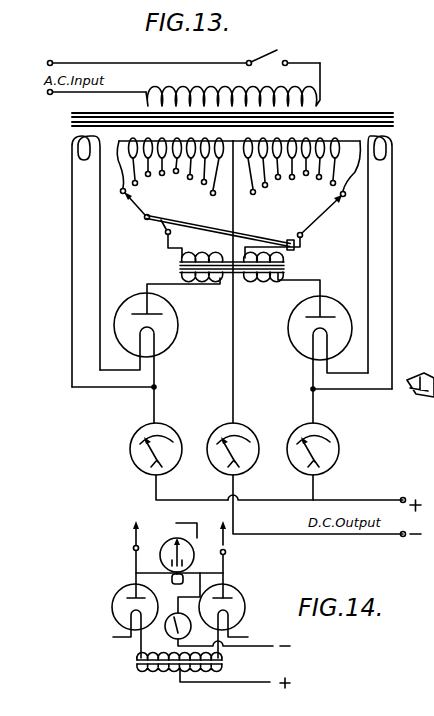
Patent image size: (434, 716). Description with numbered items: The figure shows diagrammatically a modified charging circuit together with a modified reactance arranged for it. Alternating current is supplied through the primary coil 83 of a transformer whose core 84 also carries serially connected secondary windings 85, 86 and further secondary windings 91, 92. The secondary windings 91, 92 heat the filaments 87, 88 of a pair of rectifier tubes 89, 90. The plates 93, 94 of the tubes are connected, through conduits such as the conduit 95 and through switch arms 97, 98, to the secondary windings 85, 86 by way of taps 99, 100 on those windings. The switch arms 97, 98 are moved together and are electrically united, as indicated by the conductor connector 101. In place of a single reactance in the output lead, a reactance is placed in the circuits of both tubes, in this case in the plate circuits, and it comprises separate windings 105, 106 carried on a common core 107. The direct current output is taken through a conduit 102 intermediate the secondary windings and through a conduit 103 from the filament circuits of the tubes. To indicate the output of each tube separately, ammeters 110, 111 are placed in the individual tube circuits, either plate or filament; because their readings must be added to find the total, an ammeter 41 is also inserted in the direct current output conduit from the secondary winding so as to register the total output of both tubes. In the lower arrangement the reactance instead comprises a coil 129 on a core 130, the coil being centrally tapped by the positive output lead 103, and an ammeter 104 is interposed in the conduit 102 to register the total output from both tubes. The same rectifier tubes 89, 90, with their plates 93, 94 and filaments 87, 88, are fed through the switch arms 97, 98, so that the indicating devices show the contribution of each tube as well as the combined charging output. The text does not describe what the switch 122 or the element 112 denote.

In FIG. 13, the switch 122 is at (268, 54).
In FIG. 13, the primary coil 83 is at (230, 92).
In FIG. 13, the core 84 is at (367, 117).
In FIG. 13, the secondary winding 91 is at (72, 147).
In FIG. 13, the secondary winding 92 is at (392, 150).
In FIG. 13, the tap 99 is at (187, 177).
In FIG. 13, the tap 100 is at (292, 180).
In FIG. 13, the conductor connector 101 is at (177, 216).
In FIG. 13, the secondary winding 85 is at (128, 208).
In FIG. 13, the secondary winding 86 is at (326, 216).
In FIG. 13, the switch arm 97 is at (165, 233).
In FIG. 14, the switch arm 97 is at (134, 536).
In FIG. 13, the switch arm 98 is at (327, 209).
In FIG. 14, the switch arm 98 is at (227, 544).
In FIG. 13, the conduit 95 is at (167, 246).
In FIG. 13, the winding 105 is at (200, 255).
In FIG. 13, the winding 106 is at (272, 245).
In FIG. 13, the common core 107 is at (284, 266).
In FIG. 13, the plate 93 is at (140, 310).
In FIG. 14, the plate 93 is at (128, 597).
In FIG. 13, the plate 94 is at (313, 318).
In FIG. 14, the plate 94 is at (247, 591).
In FIG. 13, the rectifier tube 89 is at (178, 311).
In FIG. 14, the rectifier tube 89 is at (113, 607).
In FIG. 13, the rectifier tube 90 is at (331, 300).
In FIG. 14, the rectifier tube 90 is at (248, 613).
In FIG. 13, the filament 87 is at (156, 341).
In FIG. 14, the filament 87 is at (127, 621).
In FIG. 13, the filament 88 is at (311, 339).
In FIG. 14, the filament 88 is at (233, 624).
In FIG. 13, the ammeter 110 is at (129, 457).
In FIG. 13, the ammeter 41 is at (245, 424).
In FIG. 13, the ammeter 111 is at (340, 453).
In FIG. 13, the conduit 103 is at (369, 503).
In FIG. 14, the conduit 103 is at (268, 683).
In FIG. 13, the conduit 102 is at (337, 540).
In FIG. 14, the conduit 102 is at (252, 647).
In FIG. 14, the indicator tube 112 is at (167, 539).
In FIG. 14, the ammeter 104 is at (173, 636).
In FIG. 14, the coil 129 is at (146, 668).
In FIG. 14, the core 130 is at (178, 670).